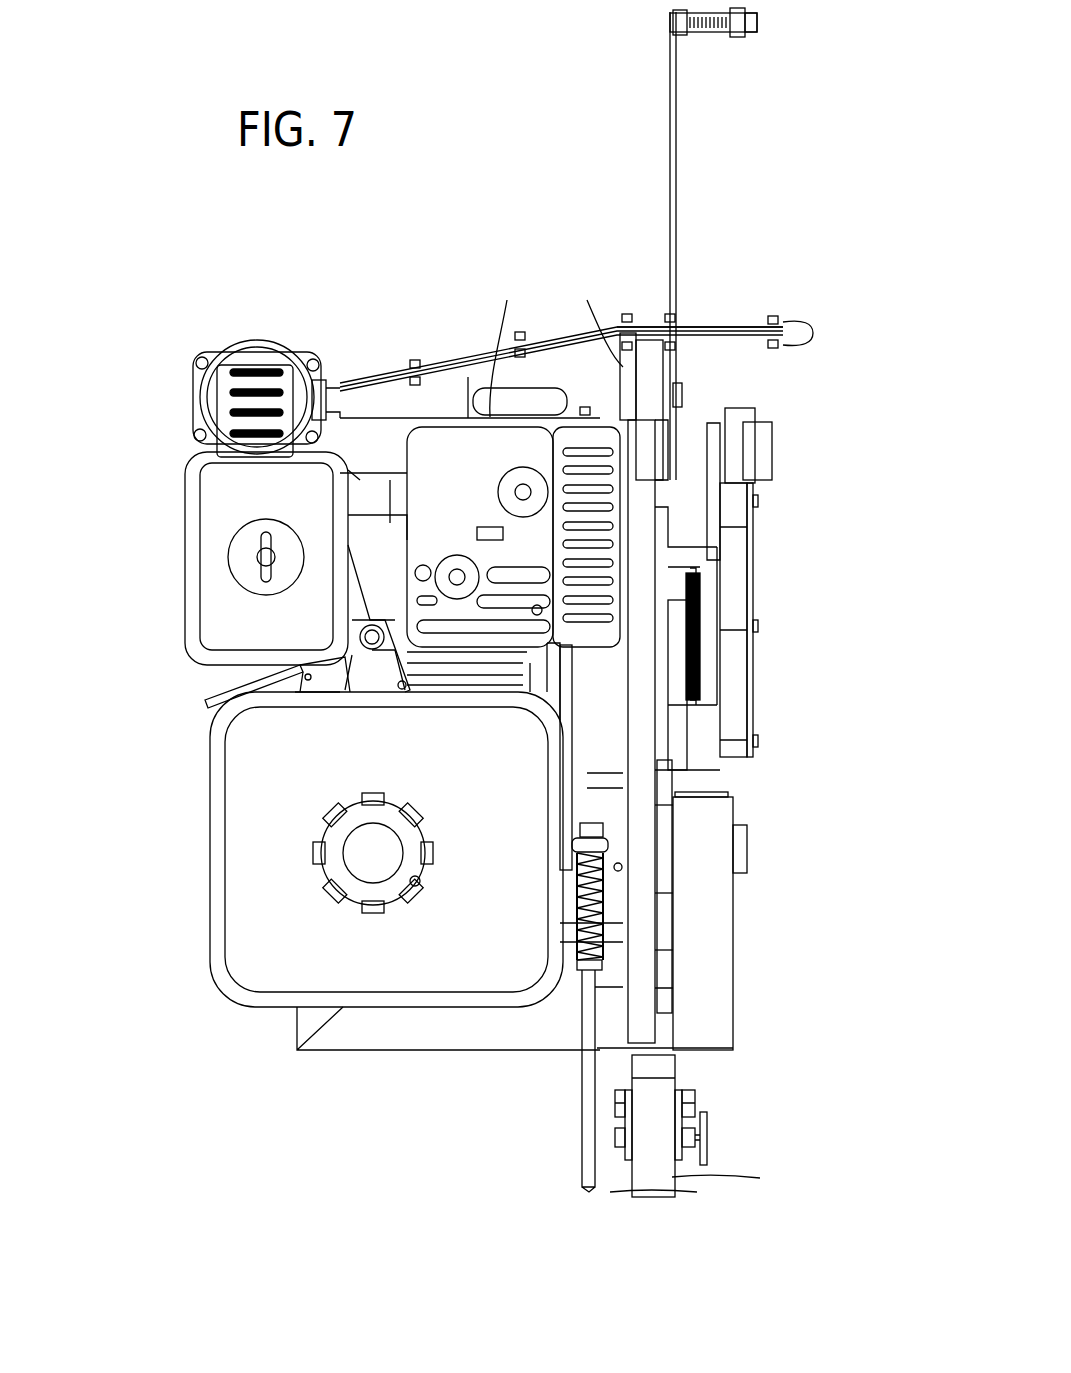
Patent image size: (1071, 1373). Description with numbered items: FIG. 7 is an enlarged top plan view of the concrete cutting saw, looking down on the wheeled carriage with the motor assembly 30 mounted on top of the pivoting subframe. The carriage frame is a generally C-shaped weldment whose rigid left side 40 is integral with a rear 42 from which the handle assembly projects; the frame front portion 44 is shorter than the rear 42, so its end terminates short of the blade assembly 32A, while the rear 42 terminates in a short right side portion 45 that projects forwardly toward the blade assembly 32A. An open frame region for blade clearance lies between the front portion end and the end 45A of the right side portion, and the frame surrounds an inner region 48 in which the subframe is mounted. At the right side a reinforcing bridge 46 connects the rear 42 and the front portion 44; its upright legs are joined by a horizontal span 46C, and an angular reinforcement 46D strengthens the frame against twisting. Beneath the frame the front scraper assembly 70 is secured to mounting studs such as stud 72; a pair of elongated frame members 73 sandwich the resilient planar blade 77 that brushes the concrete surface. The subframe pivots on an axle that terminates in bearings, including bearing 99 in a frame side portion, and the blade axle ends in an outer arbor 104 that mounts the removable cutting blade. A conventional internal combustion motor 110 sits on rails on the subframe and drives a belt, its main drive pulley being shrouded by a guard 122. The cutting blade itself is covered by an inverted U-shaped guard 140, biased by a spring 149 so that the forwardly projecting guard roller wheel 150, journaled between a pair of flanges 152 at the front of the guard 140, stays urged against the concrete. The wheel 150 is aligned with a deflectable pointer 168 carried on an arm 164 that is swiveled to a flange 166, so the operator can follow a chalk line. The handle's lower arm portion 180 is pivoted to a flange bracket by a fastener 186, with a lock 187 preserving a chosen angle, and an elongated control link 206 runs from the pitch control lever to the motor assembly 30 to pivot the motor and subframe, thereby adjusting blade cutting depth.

The motor assembly 30 is at (152, 890).
The blade assembly 32A is at (812, 507).
The left side 40 is at (292, 1018).
The rear 42 is at (510, 1035).
The frame front portion 44 is at (490, 417).
The right side portion 45 is at (728, 933).
The frame portion end 45A is at (723, 787).
The reinforcing bridge 46 is at (683, 940).
The horizontal span 46C is at (673, 988).
The angular reinforcement 46D is at (670, 893).
The inner region 48 is at (720, 771).
The front scraper assembly 70 is at (737, 287).
The mounting stud 72 is at (620, 368).
The elongated frame members 73 is at (813, 332).
The resilient planar blade 77 is at (743, 322).
The bearing 99 is at (750, 848).
The outer arbor 104 is at (777, 600).
The internal combustion motor 110 is at (205, 575).
The guard 122 is at (670, 805).
The guard 140 is at (787, 727).
The spring 149 is at (700, 657).
The guard roller wheel 150 is at (750, 415).
The projecting flanges 152 is at (720, 467).
The arm 164 is at (673, 141).
The flange 166 is at (672, 445).
The pointer 168 is at (745, 36).
The lower arm portion 180 is at (672, 1180).
The fastener 186 is at (700, 1100).
The lock 187 is at (712, 1140).
The control link 206 is at (585, 1112).